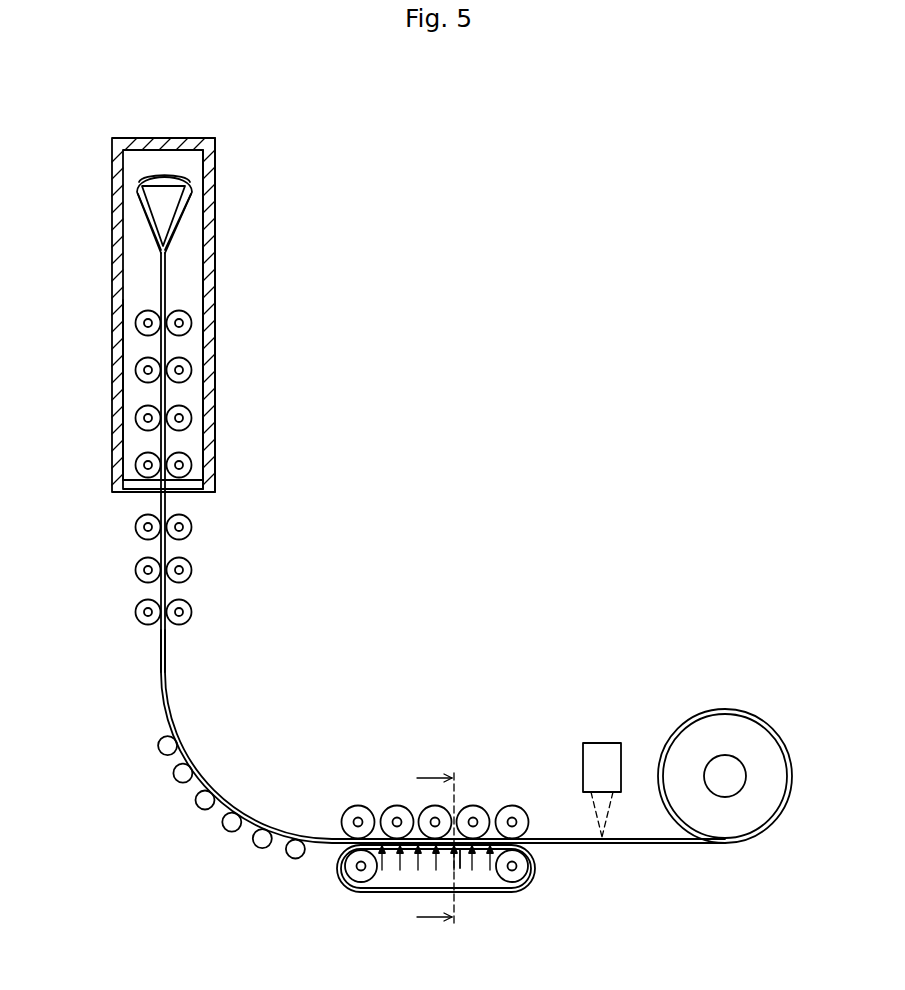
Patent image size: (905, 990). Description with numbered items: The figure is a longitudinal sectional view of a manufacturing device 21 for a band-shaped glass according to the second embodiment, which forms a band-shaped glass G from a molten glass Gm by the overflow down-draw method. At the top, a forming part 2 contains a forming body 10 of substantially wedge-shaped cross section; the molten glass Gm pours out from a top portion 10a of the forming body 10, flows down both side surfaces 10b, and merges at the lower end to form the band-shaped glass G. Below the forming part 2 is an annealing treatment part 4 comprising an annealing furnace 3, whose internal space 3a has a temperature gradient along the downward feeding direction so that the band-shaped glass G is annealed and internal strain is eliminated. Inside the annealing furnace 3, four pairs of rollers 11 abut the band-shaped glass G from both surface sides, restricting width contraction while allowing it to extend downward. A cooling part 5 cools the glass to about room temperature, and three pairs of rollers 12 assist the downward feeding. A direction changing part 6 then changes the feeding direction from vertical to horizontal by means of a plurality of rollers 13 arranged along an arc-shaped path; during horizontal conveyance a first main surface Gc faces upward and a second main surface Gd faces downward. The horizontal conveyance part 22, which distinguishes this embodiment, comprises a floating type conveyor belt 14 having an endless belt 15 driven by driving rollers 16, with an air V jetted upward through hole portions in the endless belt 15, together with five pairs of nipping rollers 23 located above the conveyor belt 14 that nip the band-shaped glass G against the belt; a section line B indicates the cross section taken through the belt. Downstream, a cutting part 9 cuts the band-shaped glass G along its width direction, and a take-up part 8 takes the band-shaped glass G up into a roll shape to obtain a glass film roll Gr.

The manufacturing device 21 is at (377, 191).
The forming part 2 is at (102, 193).
The annealing furnace 3 is at (210, 385).
The internal space 3a is at (190, 346).
The annealing treatment part 4 is at (101, 376).
The forming body 10 is at (167, 172).
The top portion 10a is at (170, 186).
The side surfaces 10b is at (147, 220).
The molten glass Gm is at (155, 181).
The band-shaped glass G is at (168, 505).
The second main surface Gd is at (159, 648).
The first main surface Gc is at (170, 650).
The rollers 11 is at (141, 317).
The rollers 12 is at (140, 569).
The cooling part 5 is at (144, 570).
The direction changing part 6 is at (207, 802).
The rollers 13 is at (203, 809).
The horizontal conveyance part 22 is at (436, 829).
The nipping rollers 23 is at (395, 806).
The conveyor belt 14 is at (436, 908).
The endless belt 15 is at (393, 890).
The driving rollers 16 is at (360, 883).
The section line B- B is at (435, 850).
The air V is at (473, 862).
The take-up part 8 is at (602, 740).
The cutting part 9 is at (749, 752).
The glass film roll Gr is at (770, 758).